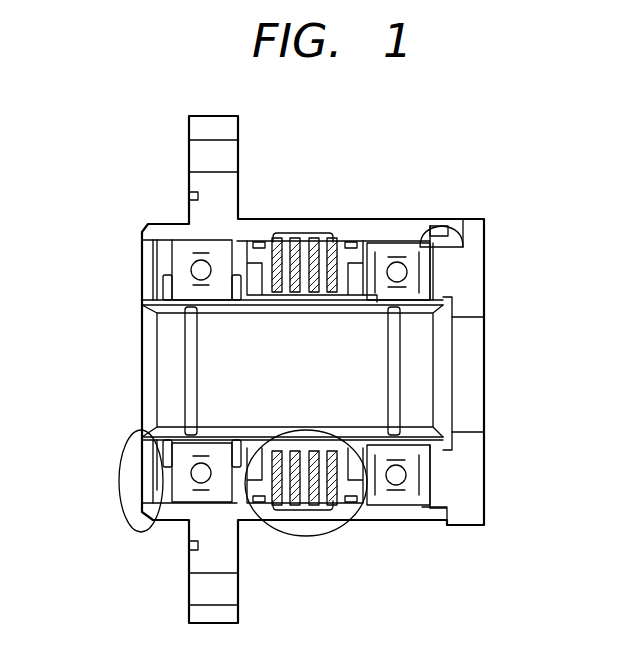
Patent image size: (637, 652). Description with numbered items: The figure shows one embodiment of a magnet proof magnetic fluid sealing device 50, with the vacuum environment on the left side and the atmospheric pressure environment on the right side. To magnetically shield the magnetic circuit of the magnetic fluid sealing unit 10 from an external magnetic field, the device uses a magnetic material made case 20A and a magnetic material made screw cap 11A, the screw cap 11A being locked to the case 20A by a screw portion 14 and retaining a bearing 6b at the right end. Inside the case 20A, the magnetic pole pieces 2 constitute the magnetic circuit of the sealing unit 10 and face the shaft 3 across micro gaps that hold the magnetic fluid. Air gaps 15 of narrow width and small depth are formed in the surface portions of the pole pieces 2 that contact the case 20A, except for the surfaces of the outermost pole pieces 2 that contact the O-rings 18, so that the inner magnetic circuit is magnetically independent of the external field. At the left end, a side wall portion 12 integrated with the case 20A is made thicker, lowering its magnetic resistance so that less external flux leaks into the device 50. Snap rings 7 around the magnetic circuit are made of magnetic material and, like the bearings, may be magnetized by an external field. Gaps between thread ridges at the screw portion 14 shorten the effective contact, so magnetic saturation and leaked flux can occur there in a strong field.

The magnetic pole piece 2 is at (258, 245).
The shaft 3 is at (427, 363).
The bearing 6b is at (405, 242).
The snap ring 7 is at (233, 273).
The magnetic fluid sealing unit 10 is at (360, 528).
The magnetic material made screw cap 11A is at (484, 288).
The side wall portion 12 is at (118, 503).
The screw portion 14 is at (453, 233).
The air gap 15 is at (302, 238).
The O-ring 18 is at (352, 243).
The magnetic material made case 20A is at (140, 237).
The magnetic fluid sealing device 50 is at (413, 530).